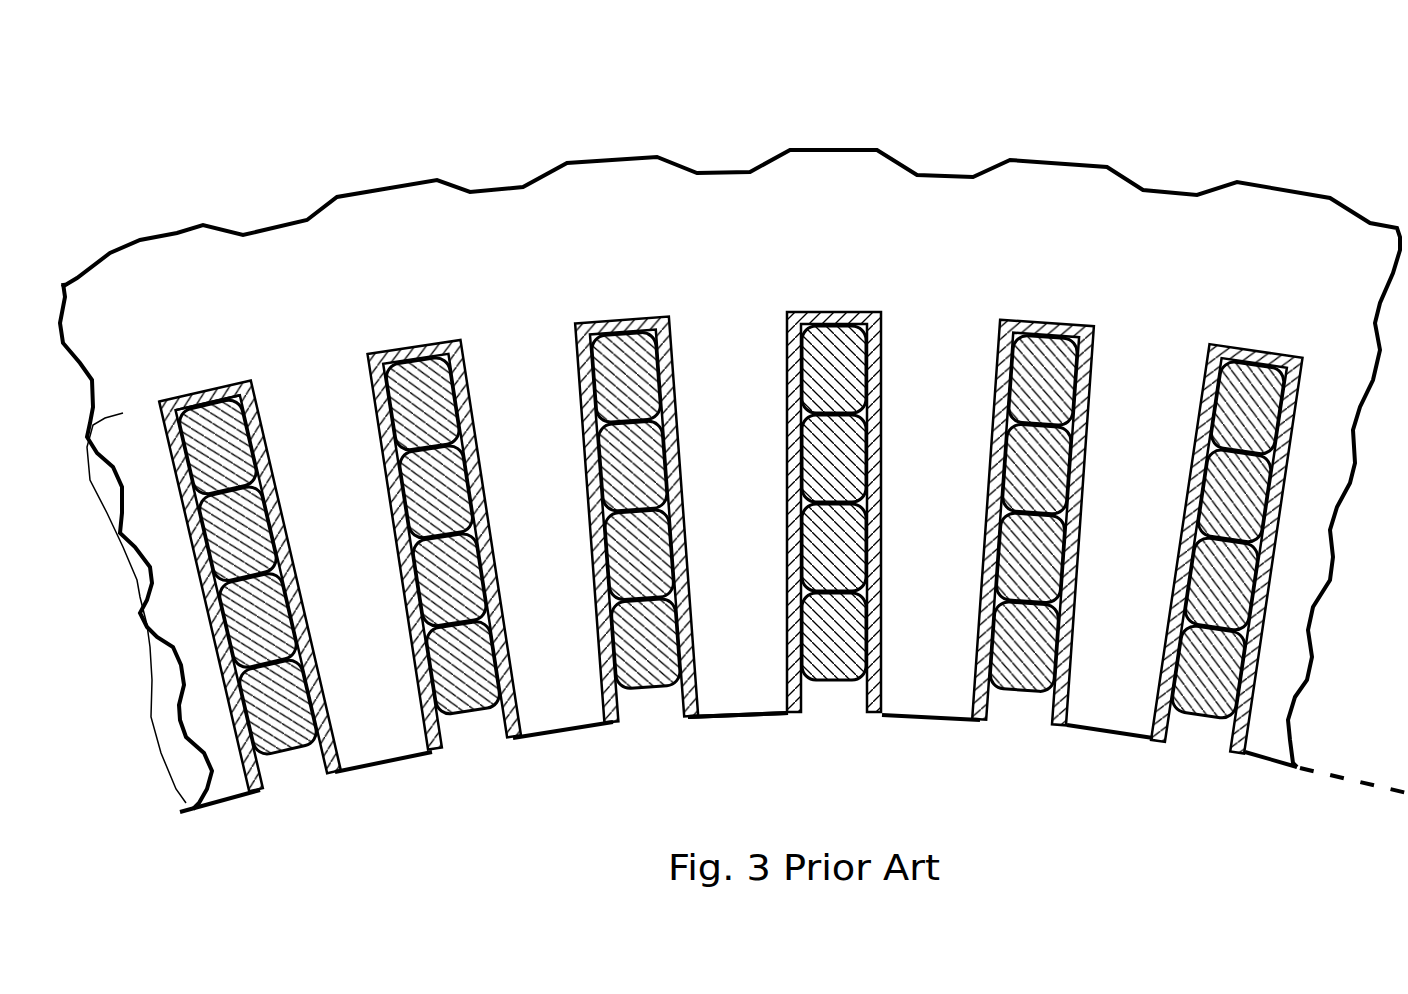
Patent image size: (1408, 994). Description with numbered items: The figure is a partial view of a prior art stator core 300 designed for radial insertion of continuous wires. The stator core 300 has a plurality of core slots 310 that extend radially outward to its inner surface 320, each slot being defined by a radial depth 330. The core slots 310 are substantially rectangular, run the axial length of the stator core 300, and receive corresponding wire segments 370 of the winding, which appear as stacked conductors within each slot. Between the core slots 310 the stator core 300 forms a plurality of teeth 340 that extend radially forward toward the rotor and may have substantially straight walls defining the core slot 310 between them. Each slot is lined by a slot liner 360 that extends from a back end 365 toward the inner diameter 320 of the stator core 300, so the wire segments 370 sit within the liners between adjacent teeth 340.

The stator core 300 is at (448, 130).
The core slots 310 is at (468, 732).
The inner surface 320 is at (1100, 738).
The radial depth 330 is at (137, 613).
The teeth 340 is at (748, 703).
The slot liners 360 is at (975, 690).
The back end 365 is at (203, 390).
The wire segments 370 is at (847, 382).